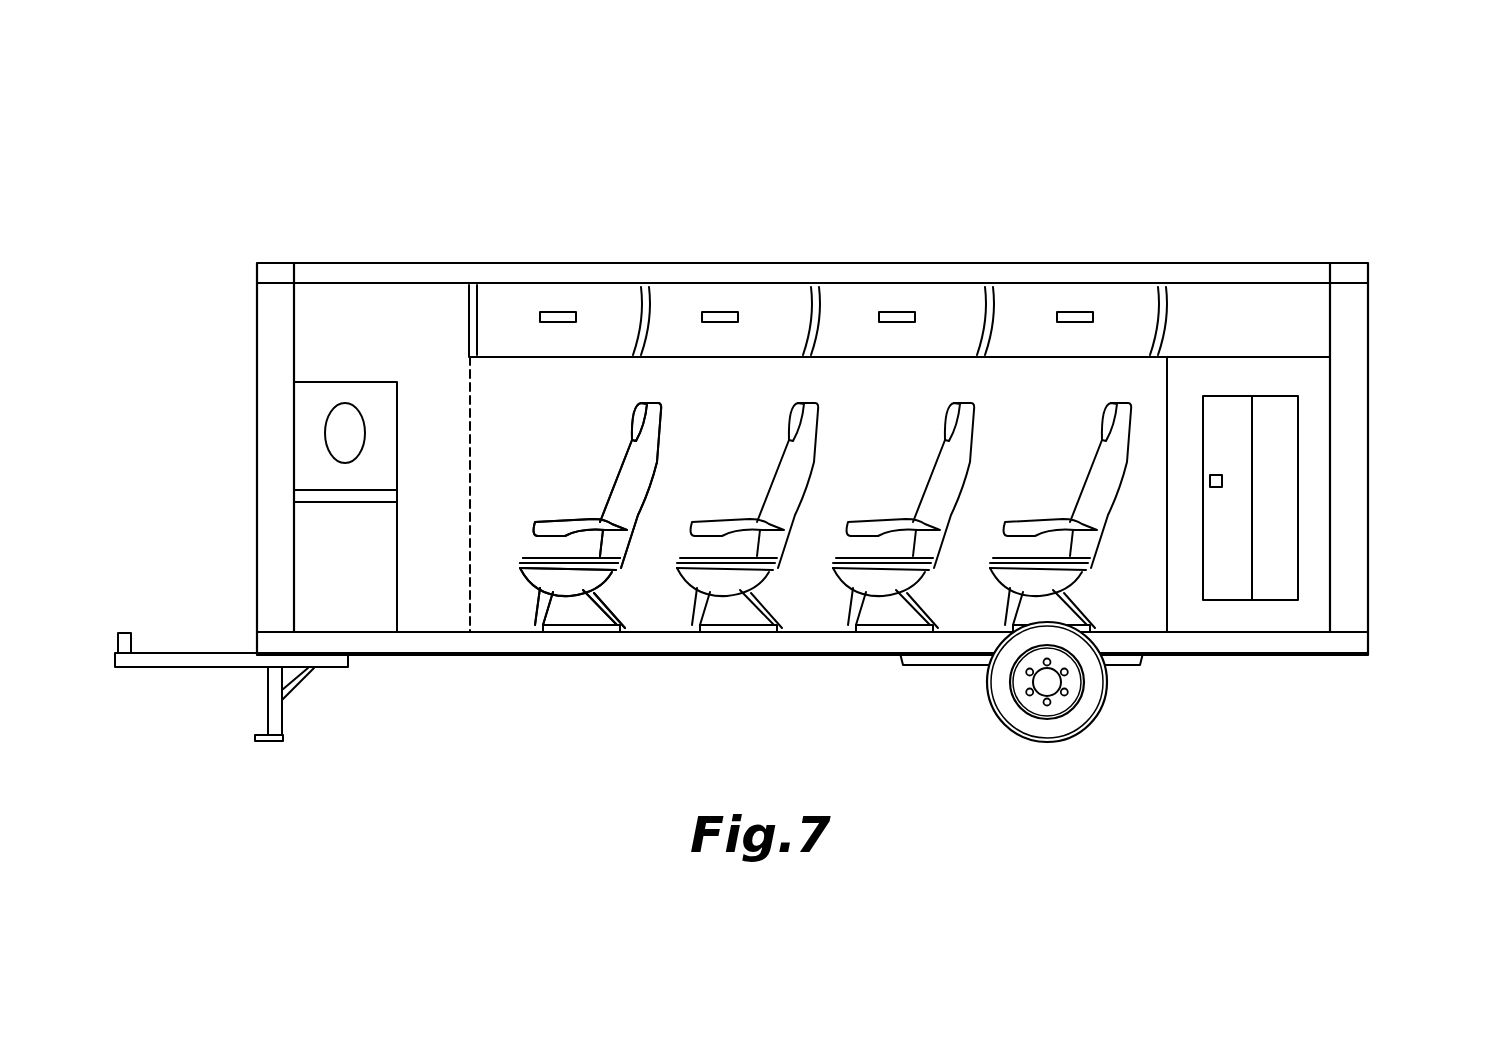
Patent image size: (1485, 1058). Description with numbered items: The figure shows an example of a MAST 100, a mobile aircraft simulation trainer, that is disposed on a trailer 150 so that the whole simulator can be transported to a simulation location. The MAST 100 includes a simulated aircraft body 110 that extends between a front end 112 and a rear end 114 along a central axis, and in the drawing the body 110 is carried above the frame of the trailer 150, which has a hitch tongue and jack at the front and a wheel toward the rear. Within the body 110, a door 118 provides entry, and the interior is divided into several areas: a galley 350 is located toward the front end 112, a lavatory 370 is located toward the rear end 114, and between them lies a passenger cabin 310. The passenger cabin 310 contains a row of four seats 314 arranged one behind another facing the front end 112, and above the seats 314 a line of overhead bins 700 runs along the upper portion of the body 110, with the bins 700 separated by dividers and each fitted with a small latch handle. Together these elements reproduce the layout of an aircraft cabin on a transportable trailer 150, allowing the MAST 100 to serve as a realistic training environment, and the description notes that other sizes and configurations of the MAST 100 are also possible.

The MAST 100 is at (1124, 156).
The simulated aircraft body 110 is at (607, 263).
The front end 112 is at (257, 461).
The rear end 114 is at (1369, 470).
The door 118 is at (401, 526).
The trailer 150 is at (750, 654).
The passenger cabin 310 is at (782, 322).
The seats 314 is at (665, 428).
The galley 350 is at (370, 306).
The lavatory 370 is at (1238, 305).
The overhead bins 700 is at (993, 308).